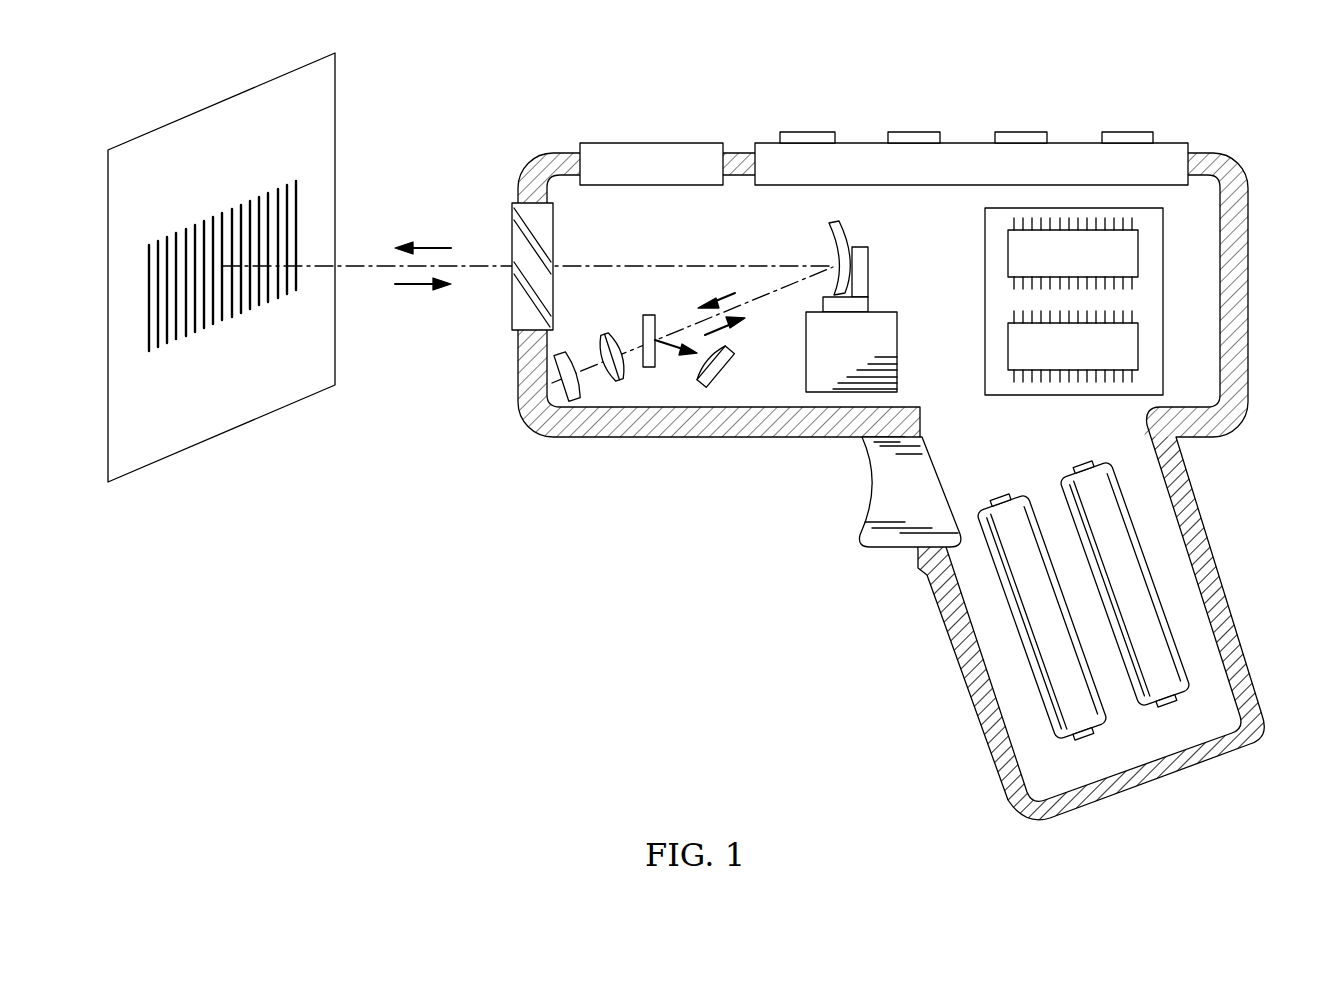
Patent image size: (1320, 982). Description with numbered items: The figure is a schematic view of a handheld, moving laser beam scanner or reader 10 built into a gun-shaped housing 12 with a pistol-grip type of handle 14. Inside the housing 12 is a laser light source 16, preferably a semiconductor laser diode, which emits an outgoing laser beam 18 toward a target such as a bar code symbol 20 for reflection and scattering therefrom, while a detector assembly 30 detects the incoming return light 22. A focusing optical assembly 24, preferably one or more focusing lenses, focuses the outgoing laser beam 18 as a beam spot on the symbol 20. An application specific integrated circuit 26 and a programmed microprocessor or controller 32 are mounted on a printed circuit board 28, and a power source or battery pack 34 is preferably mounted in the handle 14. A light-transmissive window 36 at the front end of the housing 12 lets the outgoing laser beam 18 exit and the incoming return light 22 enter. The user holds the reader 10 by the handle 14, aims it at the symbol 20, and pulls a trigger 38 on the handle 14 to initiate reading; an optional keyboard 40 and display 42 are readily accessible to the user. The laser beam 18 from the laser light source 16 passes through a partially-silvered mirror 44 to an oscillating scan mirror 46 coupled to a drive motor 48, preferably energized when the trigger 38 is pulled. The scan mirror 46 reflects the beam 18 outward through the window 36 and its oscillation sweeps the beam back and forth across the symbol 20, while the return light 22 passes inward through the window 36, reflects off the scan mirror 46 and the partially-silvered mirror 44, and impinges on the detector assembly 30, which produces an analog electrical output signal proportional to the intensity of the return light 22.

The moving laser beam reader 10 is at (878, 460).
The housing 12 is at (1250, 292).
The handle 14 is at (958, 680).
The laser light source 16 is at (576, 400).
The outgoing laser beam 18 is at (421, 246).
The bar code symbol 20 is at (276, 195).
The incoming return light 22 is at (425, 288).
The focusing optical assembly 24 is at (620, 381).
The application specific integrated circuit 26 is at (1008, 348).
The printed circuit board 28 is at (985, 305).
The detector assembly 30 is at (708, 386).
The microprocessor or controller 32 is at (1008, 254).
The battery pack 34 is at (1164, 712).
The light-transmissive window 36 is at (512, 223).
The trigger 38 is at (887, 548).
The keyboard 40 is at (1079, 148).
The display 42 is at (653, 148).
The partially-silvered mirror 44 is at (650, 368).
The oscillating scan mirror 46 is at (830, 240).
The drive motor 48 is at (818, 392).